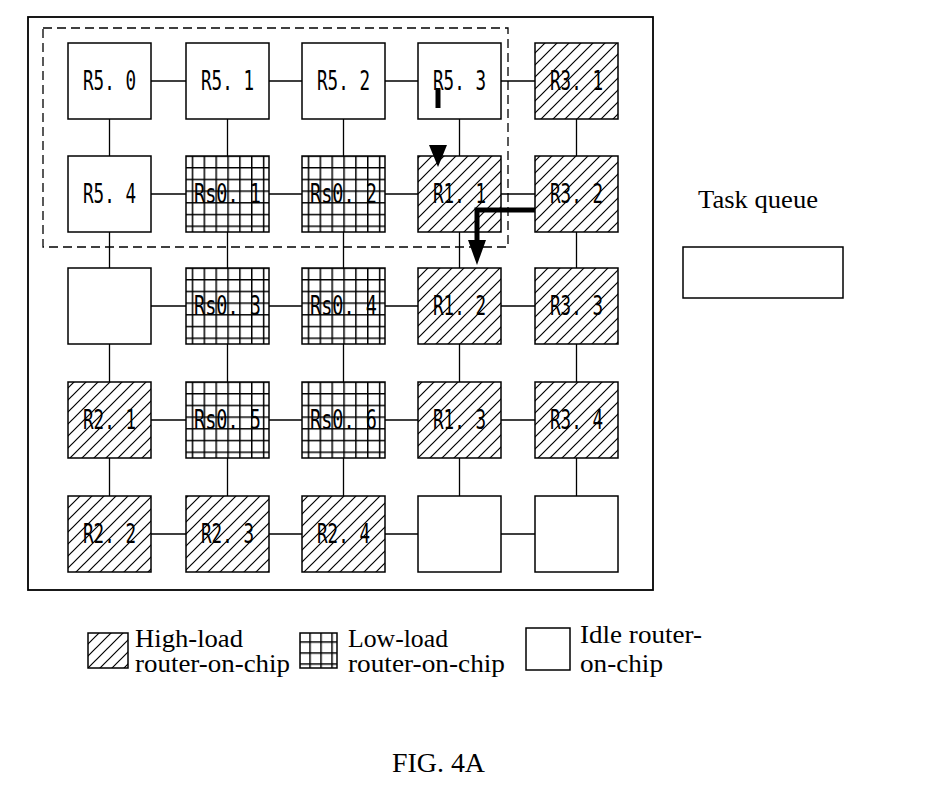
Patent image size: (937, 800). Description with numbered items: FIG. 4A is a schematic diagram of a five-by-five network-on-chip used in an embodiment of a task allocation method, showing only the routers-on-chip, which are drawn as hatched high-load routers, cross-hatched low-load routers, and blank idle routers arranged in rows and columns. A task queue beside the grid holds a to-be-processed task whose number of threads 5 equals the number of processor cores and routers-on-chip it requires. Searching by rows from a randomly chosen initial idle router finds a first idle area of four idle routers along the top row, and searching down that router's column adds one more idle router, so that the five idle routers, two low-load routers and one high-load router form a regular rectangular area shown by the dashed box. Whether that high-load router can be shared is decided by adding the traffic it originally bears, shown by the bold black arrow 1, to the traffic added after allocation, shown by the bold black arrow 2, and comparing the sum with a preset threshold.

The bold black arrow 1 is at (501, 232).
The bold black arrow 2 is at (437, 127).
The number of threads 5 is at (763, 272).